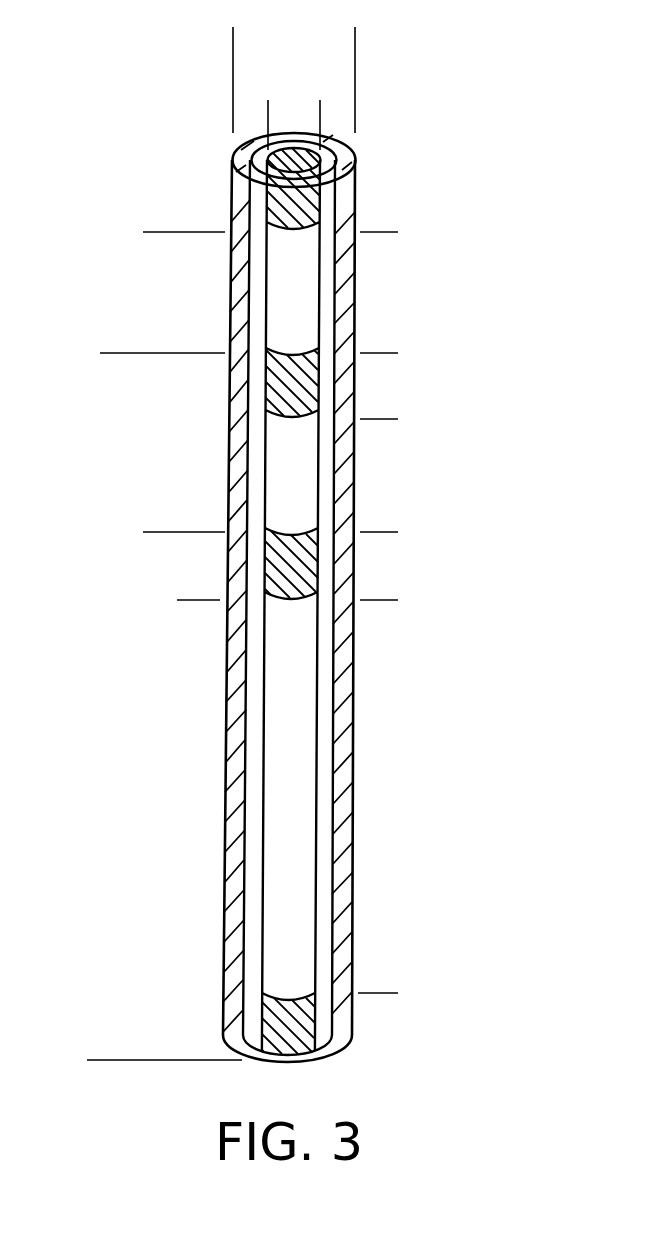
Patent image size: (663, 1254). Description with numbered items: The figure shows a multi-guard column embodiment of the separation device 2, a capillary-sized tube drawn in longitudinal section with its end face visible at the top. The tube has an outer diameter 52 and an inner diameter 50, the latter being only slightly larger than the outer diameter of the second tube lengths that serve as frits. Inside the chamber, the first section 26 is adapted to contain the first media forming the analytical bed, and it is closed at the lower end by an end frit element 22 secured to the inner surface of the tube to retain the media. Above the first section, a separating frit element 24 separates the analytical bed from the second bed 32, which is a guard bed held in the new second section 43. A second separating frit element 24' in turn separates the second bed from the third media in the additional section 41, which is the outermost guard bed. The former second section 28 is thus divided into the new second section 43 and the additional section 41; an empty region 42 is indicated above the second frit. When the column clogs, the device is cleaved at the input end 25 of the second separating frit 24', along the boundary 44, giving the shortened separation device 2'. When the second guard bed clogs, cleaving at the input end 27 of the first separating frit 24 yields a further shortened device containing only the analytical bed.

The separation device 2 is at (209, 548).
The outer diameter 52 is at (333, 37).
The inner diameter of the first tube 50 is at (284, 110).
The first chamber 42 is at (285, 299).
The additional section 41 is at (387, 248).
The second section 28 is at (153, 248).
The input end of the second separation frit 25 is at (436, 353).
The boundary 44 is at (357, 372).
The second separating frit element 24' is at (354, 385).
The second bed 32 is at (285, 481).
The new second section 43 is at (386, 435).
The separating frit element 24 is at (342, 564).
The input end of the first separation frit 27 is at (436, 600).
The shortened separation device 2' is at (164, 706).
The first section 26 is at (387, 616).
The end frit element 22 is at (297, 1022).